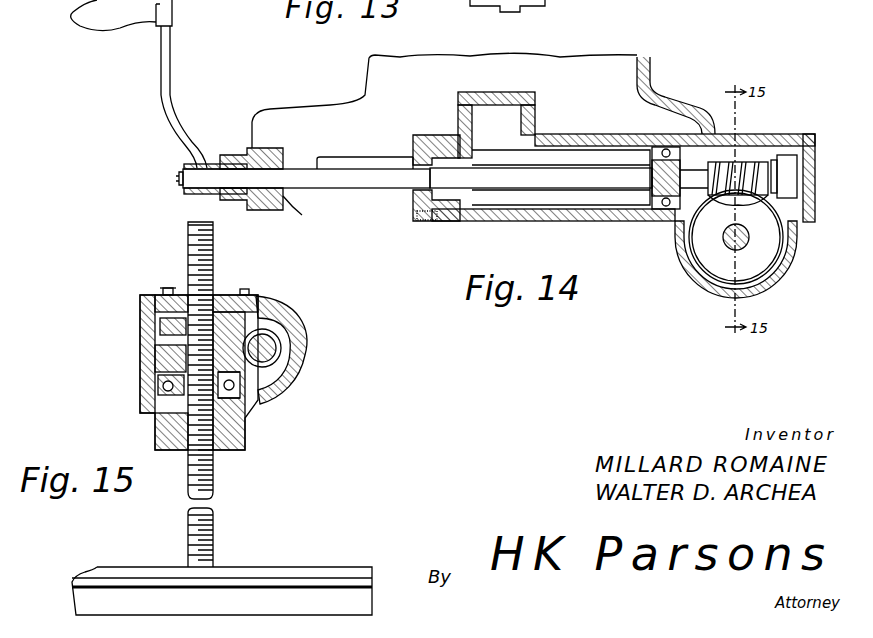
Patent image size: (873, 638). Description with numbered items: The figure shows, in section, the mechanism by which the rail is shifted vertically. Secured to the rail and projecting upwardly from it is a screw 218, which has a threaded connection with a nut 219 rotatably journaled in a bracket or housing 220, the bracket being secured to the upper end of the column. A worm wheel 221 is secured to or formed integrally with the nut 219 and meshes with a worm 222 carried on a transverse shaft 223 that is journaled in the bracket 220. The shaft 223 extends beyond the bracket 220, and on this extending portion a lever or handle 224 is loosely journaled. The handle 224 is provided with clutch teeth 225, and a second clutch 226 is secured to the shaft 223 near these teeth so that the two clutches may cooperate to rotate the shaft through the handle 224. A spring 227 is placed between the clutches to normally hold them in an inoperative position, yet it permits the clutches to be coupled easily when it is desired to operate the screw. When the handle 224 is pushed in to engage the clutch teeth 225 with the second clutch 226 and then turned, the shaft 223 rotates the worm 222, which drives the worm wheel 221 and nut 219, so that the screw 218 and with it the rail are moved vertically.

In FIG. 15, the screw 218 is at (216, 522).
In FIG. 15, the nut 219 is at (223, 403).
In FIG. 15, the bracket or housing 220 is at (307, 357).
In FIG. 15, the worm wheel 221 is at (145, 357).
In FIG. 15, the worm 222 is at (272, 342).
In FIG. 14, the transverse shaft 223 is at (590, 186).
In FIG. 14, the lever or handle 224 is at (172, 82).
In FIG. 14, the clutch teeth 225 is at (214, 200).
In FIG. 14, the second clutch 226 is at (242, 148).
In FIG. 14, the spring 227 is at (212, 196).